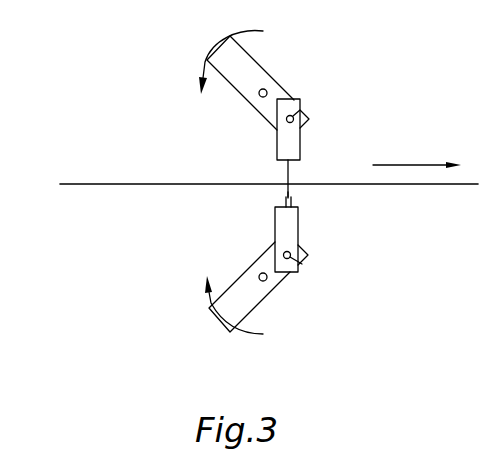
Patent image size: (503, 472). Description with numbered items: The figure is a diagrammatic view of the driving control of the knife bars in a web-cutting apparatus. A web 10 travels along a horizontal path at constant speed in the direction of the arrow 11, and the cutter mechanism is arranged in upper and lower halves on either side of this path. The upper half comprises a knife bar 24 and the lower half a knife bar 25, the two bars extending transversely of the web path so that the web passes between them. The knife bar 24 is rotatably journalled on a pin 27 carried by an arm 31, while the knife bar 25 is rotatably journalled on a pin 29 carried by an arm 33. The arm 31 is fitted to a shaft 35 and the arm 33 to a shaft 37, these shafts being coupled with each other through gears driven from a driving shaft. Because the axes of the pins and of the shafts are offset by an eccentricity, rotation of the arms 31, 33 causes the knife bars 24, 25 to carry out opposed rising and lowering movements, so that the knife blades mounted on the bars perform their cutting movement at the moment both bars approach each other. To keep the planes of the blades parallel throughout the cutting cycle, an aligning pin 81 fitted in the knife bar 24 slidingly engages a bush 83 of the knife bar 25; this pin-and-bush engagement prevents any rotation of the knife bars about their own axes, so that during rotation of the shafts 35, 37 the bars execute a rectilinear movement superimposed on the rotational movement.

The web 10 is at (146, 184).
The arrow 11 is at (395, 165).
The knife bar 24 is at (293, 148).
The knife bar 25 is at (293, 229).
The pin 27 is at (301, 110).
The pin 29 is at (302, 264).
The arm 31 is at (248, 67).
The arm 33 is at (253, 302).
The shaft 35 is at (260, 97).
The shaft 37 is at (260, 274).
The aligning pin 81 is at (287, 177).
The bush 83 is at (284, 199).